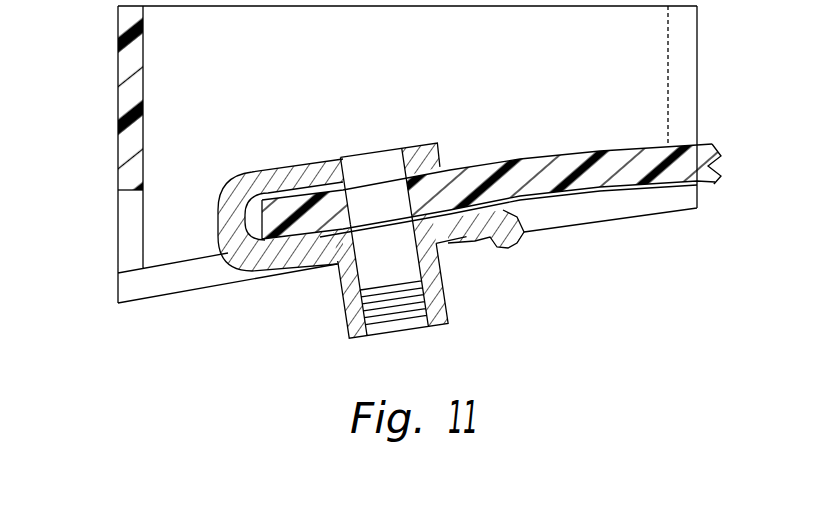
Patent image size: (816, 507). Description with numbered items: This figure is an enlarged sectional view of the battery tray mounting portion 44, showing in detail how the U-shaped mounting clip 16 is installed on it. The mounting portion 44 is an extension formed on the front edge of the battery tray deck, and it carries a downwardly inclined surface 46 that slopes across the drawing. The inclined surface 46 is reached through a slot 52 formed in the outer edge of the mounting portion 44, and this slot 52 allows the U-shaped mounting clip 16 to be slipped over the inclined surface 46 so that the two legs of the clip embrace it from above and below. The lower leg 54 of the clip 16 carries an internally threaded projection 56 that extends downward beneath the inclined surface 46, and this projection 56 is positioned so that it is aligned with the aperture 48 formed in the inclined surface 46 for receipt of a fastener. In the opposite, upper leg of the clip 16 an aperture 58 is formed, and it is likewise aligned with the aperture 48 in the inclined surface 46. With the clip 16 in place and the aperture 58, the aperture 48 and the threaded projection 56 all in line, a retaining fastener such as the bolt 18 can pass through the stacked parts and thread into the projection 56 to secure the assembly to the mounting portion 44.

The mounting clip 16 is at (224, 192).
The bolt 18 is at (703, 145).
The mounting portion 44 is at (88, 290).
The inclined surface 46 is at (540, 153).
The aperture 48 is at (379, 143).
The slot 52 is at (130, 192).
The lower leg 54 is at (482, 249).
The internally threaded projection 56 is at (436, 281).
The aperture 58 is at (374, 138).